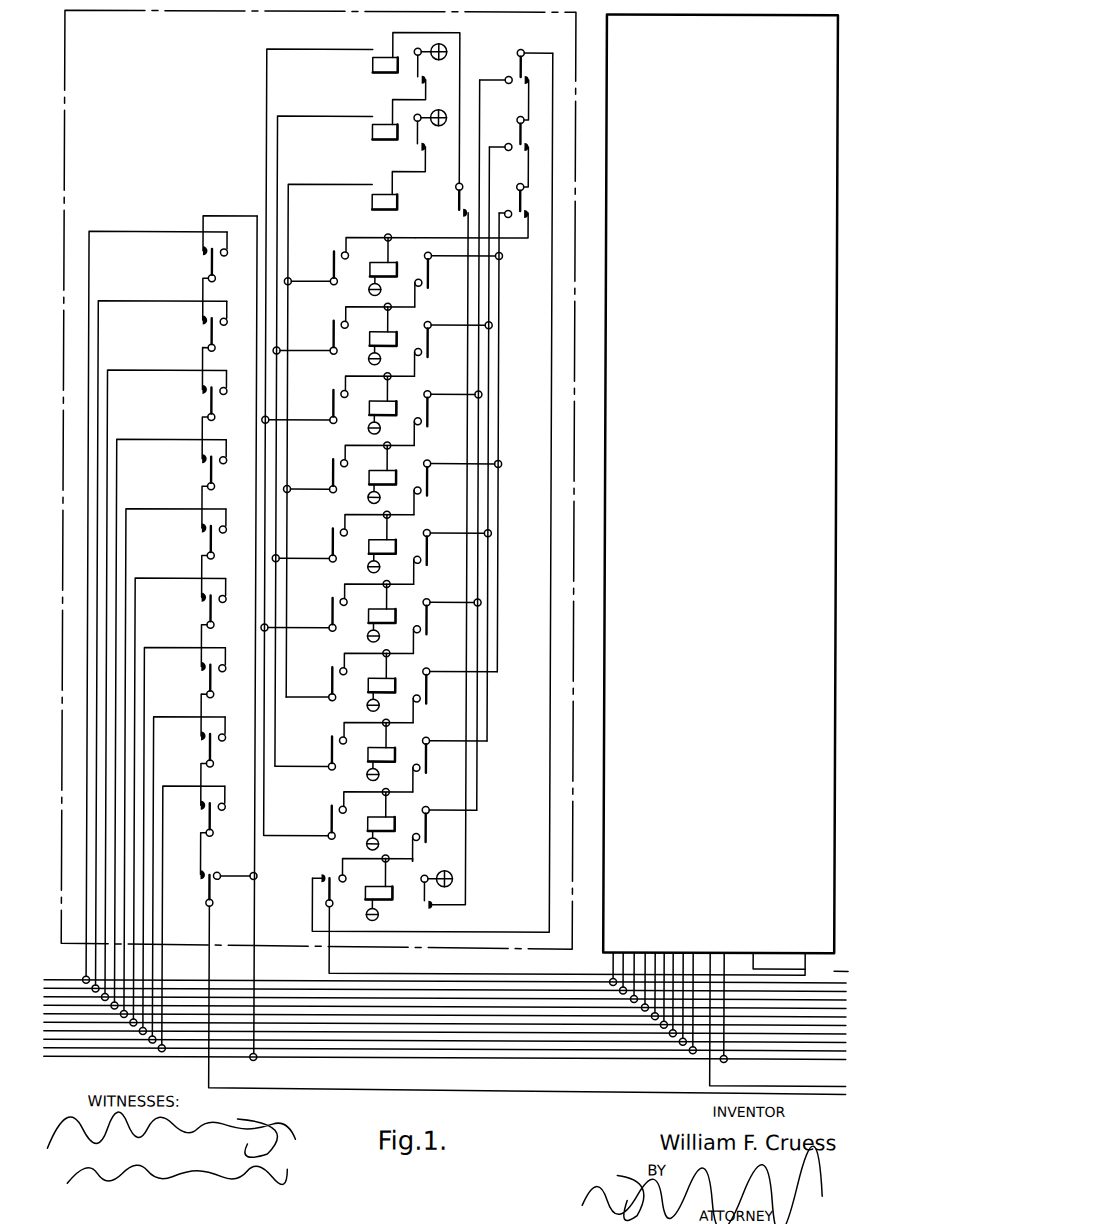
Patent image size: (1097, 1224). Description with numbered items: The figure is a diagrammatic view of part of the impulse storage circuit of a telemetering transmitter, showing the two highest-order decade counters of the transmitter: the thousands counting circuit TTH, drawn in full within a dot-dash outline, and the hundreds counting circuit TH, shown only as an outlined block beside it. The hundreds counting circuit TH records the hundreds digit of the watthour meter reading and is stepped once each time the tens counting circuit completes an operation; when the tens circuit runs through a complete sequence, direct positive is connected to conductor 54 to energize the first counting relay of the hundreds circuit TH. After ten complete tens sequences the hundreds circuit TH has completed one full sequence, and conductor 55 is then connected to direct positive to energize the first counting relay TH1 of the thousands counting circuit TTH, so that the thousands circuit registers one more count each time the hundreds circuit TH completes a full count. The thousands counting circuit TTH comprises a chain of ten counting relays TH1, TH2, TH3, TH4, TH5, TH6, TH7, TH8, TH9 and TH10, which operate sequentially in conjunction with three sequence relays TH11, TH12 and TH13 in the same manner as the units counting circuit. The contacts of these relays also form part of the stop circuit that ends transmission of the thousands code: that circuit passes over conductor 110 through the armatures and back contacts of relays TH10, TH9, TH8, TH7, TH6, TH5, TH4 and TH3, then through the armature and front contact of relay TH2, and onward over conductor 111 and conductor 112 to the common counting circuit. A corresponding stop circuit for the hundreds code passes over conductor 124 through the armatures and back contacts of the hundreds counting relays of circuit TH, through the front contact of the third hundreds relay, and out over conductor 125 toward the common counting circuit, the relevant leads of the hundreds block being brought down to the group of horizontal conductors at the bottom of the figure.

The conductor 54 is at (840, 970).
The conductor 55 is at (517, 974).
The conductor 110 is at (314, 1089).
The conductor 111 is at (135, 302).
The conductor 112 is at (271, 989).
The conductor 124 is at (734, 1085).
The conductor 125 is at (637, 964).
The hundreds counting circuit TH is at (709, 288).
The thousands counting circuit TTH is at (166, 95).
The first counting relay TH1 is at (369, 276).
The counting relay TH2 is at (369, 345).
The counting relay TH3 is at (369, 415).
The counting relay TH4 is at (369, 484).
The counting relay TH5 is at (369, 553).
The counting relay TH6 is at (369, 622).
The counting relay TH7 is at (369, 692).
The counting relay TH8 is at (369, 761).
The counting relay TH9 is at (369, 830).
The counting relay TH10 is at (392, 890).
The sequence relay TH11 is at (371, 203).
The sequence relay TH12 is at (371, 133).
The sequence relay TH13 is at (372, 66).